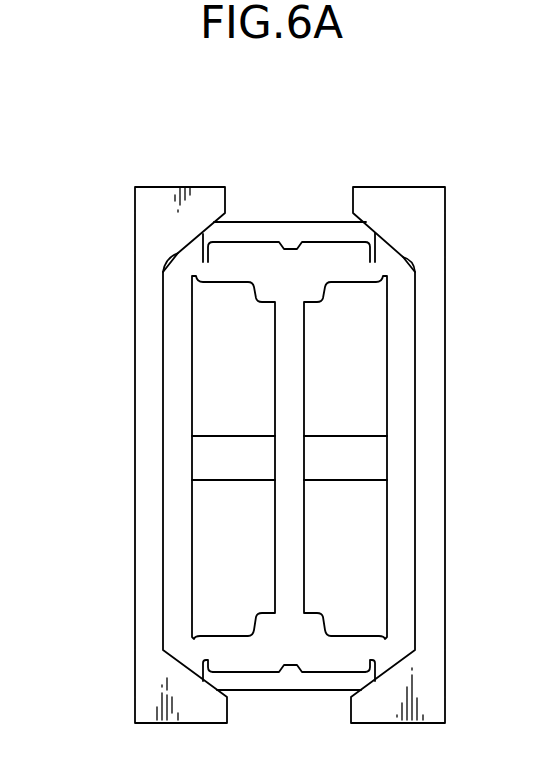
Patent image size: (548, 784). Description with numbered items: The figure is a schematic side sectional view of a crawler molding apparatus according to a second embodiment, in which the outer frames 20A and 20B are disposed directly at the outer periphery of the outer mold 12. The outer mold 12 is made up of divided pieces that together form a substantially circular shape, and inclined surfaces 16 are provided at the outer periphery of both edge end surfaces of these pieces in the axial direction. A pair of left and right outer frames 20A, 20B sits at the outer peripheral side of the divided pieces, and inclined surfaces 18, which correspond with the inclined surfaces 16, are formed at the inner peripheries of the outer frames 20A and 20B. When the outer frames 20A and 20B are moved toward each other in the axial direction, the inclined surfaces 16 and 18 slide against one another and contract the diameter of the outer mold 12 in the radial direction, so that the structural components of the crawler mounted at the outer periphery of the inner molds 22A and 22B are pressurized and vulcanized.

The outer mold 12 is at (292, 232).
The inclined surfaces 16 is at (224, 220).
The inclined surfaces 18 is at (177, 265).
The outer frame 20A is at (153, 212).
The outer frame 20B is at (410, 200).
The inner mold 22A is at (205, 372).
The inner mold 22B is at (370, 380).